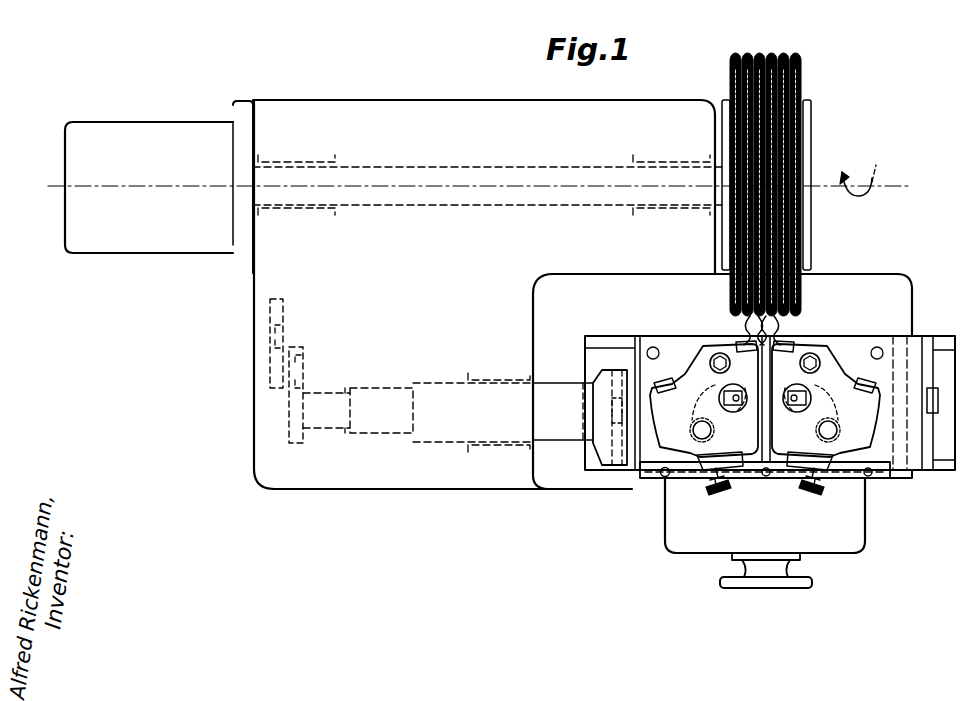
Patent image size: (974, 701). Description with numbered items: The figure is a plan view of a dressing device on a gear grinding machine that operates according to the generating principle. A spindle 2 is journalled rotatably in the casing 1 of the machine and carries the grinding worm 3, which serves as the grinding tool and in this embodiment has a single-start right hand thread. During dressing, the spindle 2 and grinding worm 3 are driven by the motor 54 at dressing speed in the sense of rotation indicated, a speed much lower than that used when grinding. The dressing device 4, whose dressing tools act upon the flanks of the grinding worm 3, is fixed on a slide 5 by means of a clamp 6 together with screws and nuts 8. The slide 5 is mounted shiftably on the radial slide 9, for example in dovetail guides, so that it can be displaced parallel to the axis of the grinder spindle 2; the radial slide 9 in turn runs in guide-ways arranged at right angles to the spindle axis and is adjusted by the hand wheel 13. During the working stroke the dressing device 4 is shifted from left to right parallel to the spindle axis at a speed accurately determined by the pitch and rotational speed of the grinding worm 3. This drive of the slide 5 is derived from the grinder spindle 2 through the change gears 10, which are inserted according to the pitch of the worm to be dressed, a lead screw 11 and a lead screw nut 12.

The motor 54 is at (145, 124).
The casing 1 is at (436, 100).
The spindle 2 is at (291, 167).
The grinding worm 3 is at (802, 80).
The dressing device 4 is at (864, 338).
The slide 5 is at (640, 426).
The clamp 6 is at (648, 480).
The nuts 8 is at (667, 477).
The radial slide 9 is at (851, 544).
The change gears 10 is at (292, 345).
The lead screw 11 is at (390, 433).
The lead screw nut 12 is at (563, 440).
The hand wheel 13 is at (769, 583).